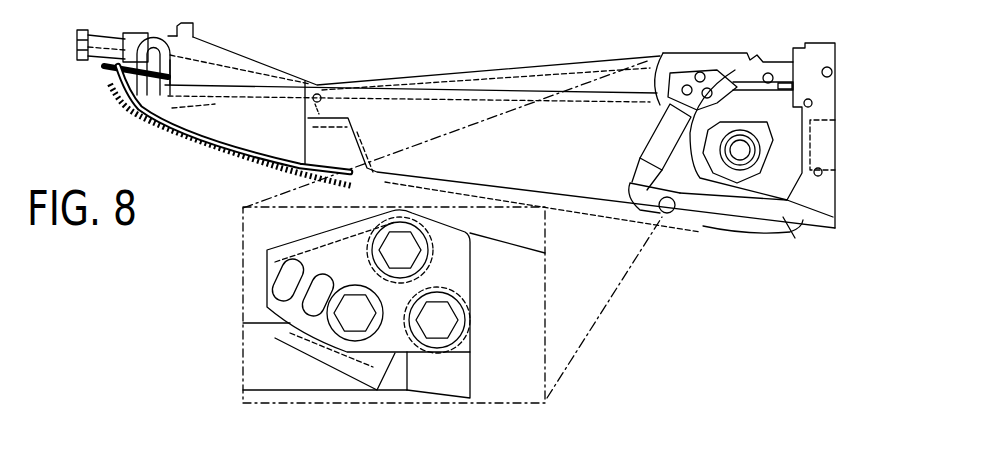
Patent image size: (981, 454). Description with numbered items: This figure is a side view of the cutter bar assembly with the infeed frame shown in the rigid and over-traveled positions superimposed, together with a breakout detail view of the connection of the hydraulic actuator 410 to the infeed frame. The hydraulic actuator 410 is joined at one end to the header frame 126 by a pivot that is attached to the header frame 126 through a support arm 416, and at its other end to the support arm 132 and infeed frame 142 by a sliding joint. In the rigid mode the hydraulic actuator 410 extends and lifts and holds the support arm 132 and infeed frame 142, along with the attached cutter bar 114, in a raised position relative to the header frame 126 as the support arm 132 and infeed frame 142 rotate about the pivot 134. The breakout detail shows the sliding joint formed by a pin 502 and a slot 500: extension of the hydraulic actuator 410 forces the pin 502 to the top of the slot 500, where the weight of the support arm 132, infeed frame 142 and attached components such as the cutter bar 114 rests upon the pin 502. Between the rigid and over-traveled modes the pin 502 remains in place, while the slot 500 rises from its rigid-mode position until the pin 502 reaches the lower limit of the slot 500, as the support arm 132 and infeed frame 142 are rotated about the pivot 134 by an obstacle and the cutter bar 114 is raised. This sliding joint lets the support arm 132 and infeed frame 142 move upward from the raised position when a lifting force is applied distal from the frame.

The cutter bar 114 is at (120, 76).
The header frame 126 is at (820, 142).
The pivot 134 is at (834, 65).
The support arm 132 is at (590, 173).
The infeed frame 142 is at (395, 383).
The hydraulic actuator 410 is at (663, 147).
The support arm 416 is at (787, 217).
The slot 500 is at (268, 362).
The pin 502 is at (350, 307).